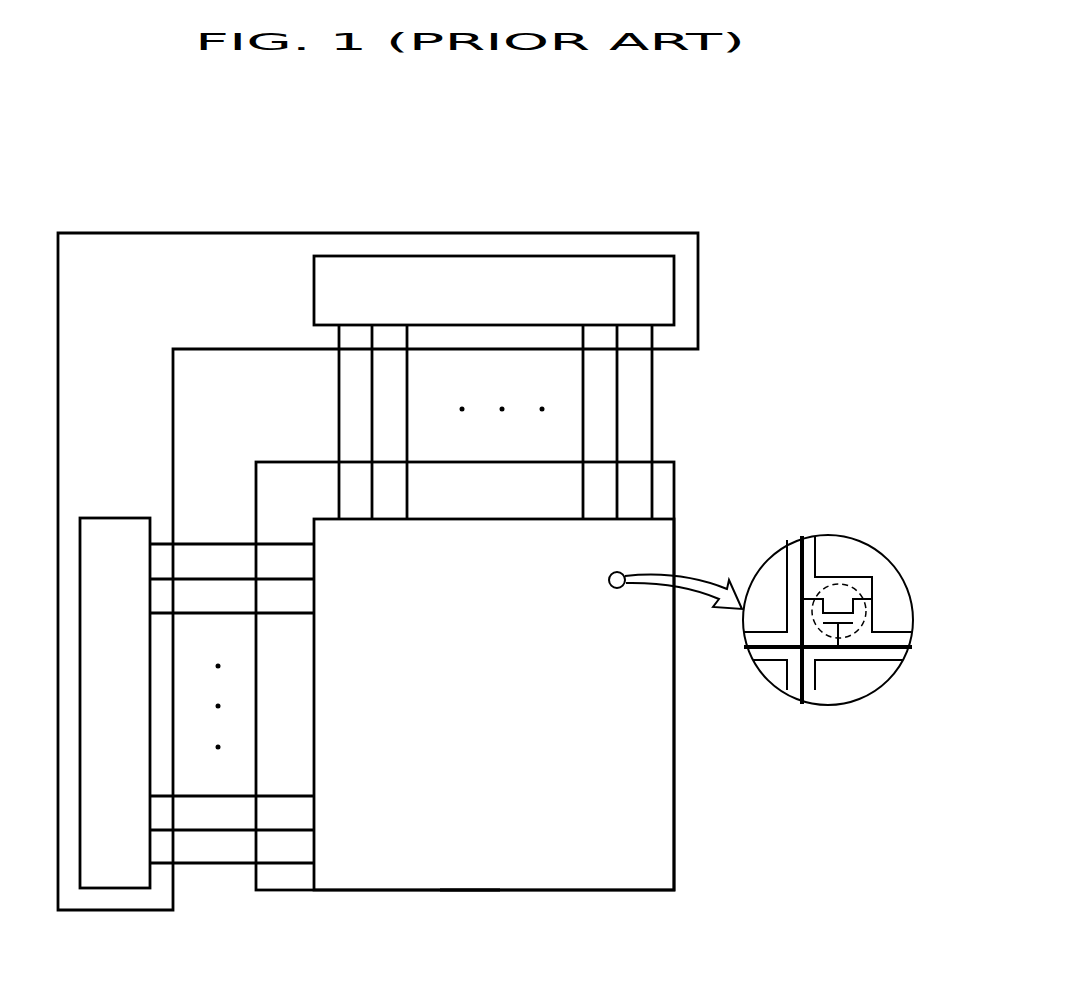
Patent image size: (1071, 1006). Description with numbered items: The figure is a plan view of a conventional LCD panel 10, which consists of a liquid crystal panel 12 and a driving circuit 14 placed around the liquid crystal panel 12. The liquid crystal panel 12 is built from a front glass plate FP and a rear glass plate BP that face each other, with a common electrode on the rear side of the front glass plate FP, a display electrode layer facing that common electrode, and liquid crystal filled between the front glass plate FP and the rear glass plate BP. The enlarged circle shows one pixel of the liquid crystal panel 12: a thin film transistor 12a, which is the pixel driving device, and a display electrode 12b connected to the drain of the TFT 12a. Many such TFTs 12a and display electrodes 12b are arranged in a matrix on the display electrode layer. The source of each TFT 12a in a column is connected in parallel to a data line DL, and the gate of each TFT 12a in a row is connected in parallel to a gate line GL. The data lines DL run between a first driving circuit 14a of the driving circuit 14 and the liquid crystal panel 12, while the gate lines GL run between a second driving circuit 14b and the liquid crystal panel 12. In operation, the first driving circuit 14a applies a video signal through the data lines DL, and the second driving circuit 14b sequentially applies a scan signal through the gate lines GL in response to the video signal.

The LCD panel 10 is at (769, 268).
The liquid crystal panel 12 is at (507, 715).
The thin film transistor 12a is at (857, 592).
The display electrode 12b is at (770, 577).
The driving circuit 14 is at (122, 317).
The first driving circuit 14a is at (511, 303).
The second driving circuit 14b is at (136, 713).
The gate line GL is at (213, 865).
The data line DL is at (782, 548).
The rear glass plate BP is at (286, 880).
The front glass plate FP is at (467, 878).